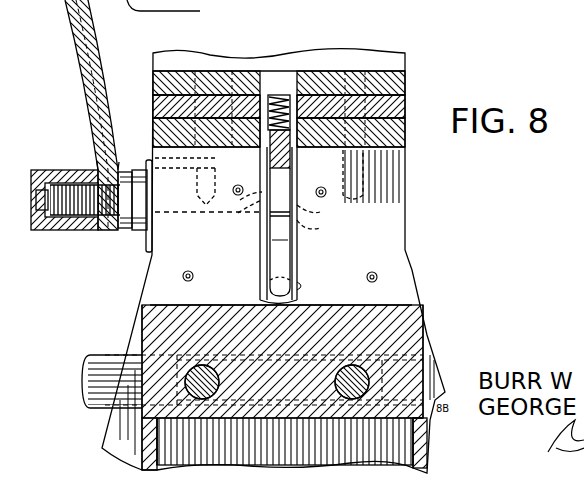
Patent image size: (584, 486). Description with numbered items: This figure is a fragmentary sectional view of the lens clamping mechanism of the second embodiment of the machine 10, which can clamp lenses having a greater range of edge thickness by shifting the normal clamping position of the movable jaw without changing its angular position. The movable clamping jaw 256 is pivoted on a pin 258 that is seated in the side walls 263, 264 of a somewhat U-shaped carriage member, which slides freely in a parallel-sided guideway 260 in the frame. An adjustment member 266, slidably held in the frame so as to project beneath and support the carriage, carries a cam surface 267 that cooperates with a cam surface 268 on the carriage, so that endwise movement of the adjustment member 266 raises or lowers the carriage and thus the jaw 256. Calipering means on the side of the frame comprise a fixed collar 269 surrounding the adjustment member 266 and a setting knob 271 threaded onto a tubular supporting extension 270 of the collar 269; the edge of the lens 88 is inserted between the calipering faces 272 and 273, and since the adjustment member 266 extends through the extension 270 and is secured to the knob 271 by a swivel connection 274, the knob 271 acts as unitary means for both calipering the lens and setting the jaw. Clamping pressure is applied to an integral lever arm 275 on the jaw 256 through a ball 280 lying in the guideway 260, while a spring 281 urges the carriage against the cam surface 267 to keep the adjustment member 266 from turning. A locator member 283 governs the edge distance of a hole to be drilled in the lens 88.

The machine housing 10 is at (418, 224).
The lens 88 is at (62, 3).
The movable clamping jaw 256 is at (298, 184).
The pivot pin 258 is at (185, 181).
The guideway 260 is at (268, 250).
The side wall 263 is at (263, 196).
The side wall 264 is at (297, 208).
The adjustment member 266 is at (206, 204).
The cam surface 267 is at (262, 200).
The cam surface 268 is at (298, 222).
The fixed collar 269 is at (128, 231).
The tubular supporting extension 270 is at (76, 230).
The setting knob 271 is at (38, 228).
The calipering face 272 is at (97, 162).
The calipering face 273 is at (120, 162).
The swivel connection 274 is at (42, 176).
The lever arm 275 is at (288, 250).
The ball 280 is at (297, 288).
The spring 281 is at (285, 96).
The locator member 283 is at (272, 97).